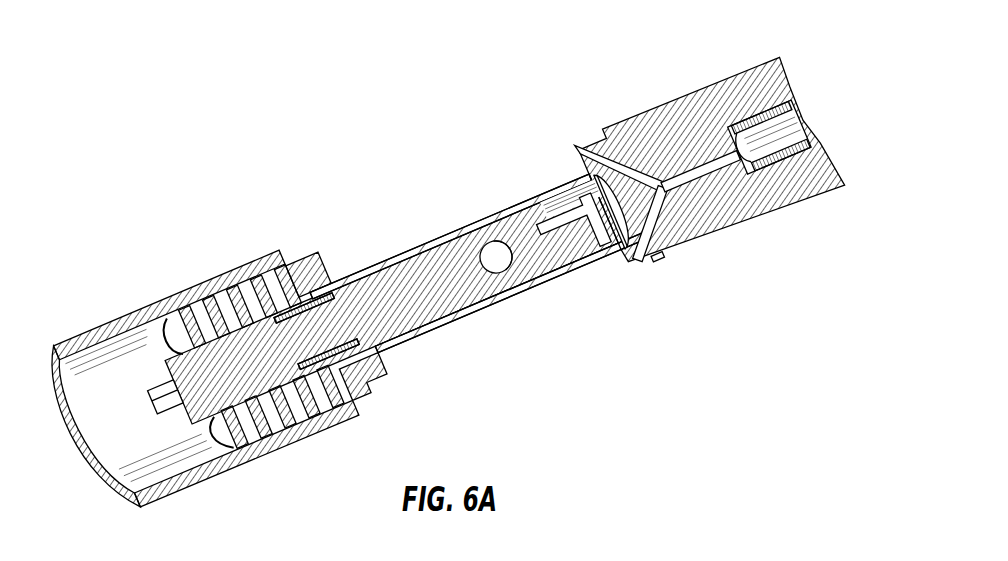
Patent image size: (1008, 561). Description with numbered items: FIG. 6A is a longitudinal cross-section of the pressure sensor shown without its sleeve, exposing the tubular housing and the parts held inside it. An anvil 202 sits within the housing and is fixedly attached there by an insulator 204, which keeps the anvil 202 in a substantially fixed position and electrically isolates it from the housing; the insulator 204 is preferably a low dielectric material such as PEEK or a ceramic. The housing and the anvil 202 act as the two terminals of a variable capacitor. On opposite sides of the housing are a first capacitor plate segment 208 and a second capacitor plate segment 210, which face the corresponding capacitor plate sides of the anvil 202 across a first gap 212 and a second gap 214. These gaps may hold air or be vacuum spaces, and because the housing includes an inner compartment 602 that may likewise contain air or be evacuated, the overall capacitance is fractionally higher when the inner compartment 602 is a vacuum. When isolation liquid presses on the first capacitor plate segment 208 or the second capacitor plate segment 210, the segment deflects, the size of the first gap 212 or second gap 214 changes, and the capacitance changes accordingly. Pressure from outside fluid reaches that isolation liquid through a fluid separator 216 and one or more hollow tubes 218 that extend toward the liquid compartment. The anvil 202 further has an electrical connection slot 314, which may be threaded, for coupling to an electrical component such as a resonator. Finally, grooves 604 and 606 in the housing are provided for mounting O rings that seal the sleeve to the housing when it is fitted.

The anvil 202 is at (553, 253).
The insulator 204 is at (210, 322).
The first capacitor plate segment 208 is at (403, 251).
The second capacitor plate segment 210 is at (427, 333).
The first gap 212 is at (481, 222).
The second gap 214 is at (483, 302).
The fluid separator 216 is at (773, 133).
The hollow tubes 218 is at (617, 167).
The electrical connection slot 314 is at (165, 398).
The inner compartment 602 is at (575, 193).
The groove 604 is at (368, 383).
The groove 606 is at (657, 263).